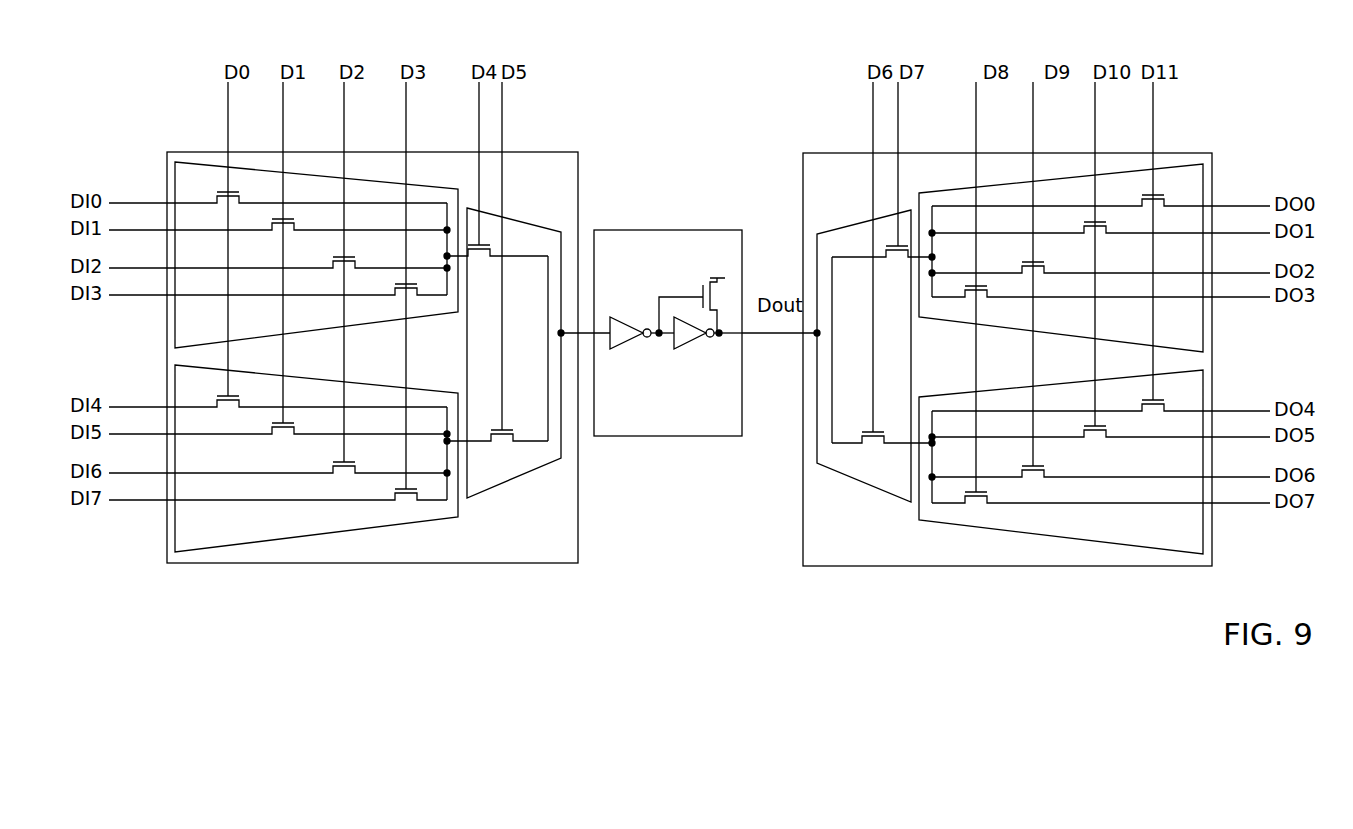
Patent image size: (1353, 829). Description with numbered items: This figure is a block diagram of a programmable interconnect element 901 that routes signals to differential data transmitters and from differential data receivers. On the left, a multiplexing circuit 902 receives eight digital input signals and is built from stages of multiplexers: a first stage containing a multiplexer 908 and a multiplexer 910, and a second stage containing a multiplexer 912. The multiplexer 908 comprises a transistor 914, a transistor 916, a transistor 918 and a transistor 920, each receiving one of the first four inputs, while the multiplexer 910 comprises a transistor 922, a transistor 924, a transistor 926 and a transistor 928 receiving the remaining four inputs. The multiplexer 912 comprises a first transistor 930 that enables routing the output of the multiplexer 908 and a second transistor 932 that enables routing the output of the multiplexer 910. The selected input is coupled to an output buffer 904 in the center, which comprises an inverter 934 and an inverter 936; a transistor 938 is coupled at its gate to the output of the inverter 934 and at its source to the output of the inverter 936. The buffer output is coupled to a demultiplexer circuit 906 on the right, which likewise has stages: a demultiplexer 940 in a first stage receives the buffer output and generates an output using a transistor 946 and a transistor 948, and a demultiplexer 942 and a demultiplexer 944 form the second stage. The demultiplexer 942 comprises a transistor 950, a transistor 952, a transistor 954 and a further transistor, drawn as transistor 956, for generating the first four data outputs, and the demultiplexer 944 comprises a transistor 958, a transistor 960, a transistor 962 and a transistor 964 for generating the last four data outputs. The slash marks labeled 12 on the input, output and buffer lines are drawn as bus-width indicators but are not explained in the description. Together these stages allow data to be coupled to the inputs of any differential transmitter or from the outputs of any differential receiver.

The bus width indicator 12 is at (159, 490).
The programmable interconnect element 901 is at (112, 166).
The multiplexing circuit 902 is at (578, 192).
The output buffer 904 is at (630, 437).
The demultiplexer circuit 906 is at (803, 193).
The multiplexer 908 is at (453, 188).
The multiplexer 910 is at (453, 392).
The multiplexer 912 is at (527, 223).
The transistor 914 is at (217, 200).
The transistor 916 is at (272, 235).
The transistor 918 is at (335, 265).
The transistor 920 is at (393, 296).
The transistor 922 is at (217, 404).
The transistor 924 is at (272, 439).
The transistor 926 is at (335, 470).
The transistor 928 is at (393, 501).
The first transistor 930 is at (495, 249).
The second transistor 932 is at (510, 428).
The inverter 934 is at (621, 319).
The inverter 936 is at (688, 352).
The transistor 938 is at (700, 290).
The demultiplexer 940 is at (852, 223).
The demultiplexer 942 is at (942, 188).
The demultiplexer 944 is at (942, 394).
The transistor 946 is at (886, 251).
The transistor 948 is at (866, 432).
The transistor 950 is at (1164, 203).
The transistor 952 is at (1108, 231).
The transistor 954 is at (1045, 269).
The pass transistor 956 is at (986, 299).
The transistor 958 is at (1180, 392).
The transistor 960 is at (1110, 442).
The transistor 962 is at (1044, 474).
The transistor 964 is at (988, 503).